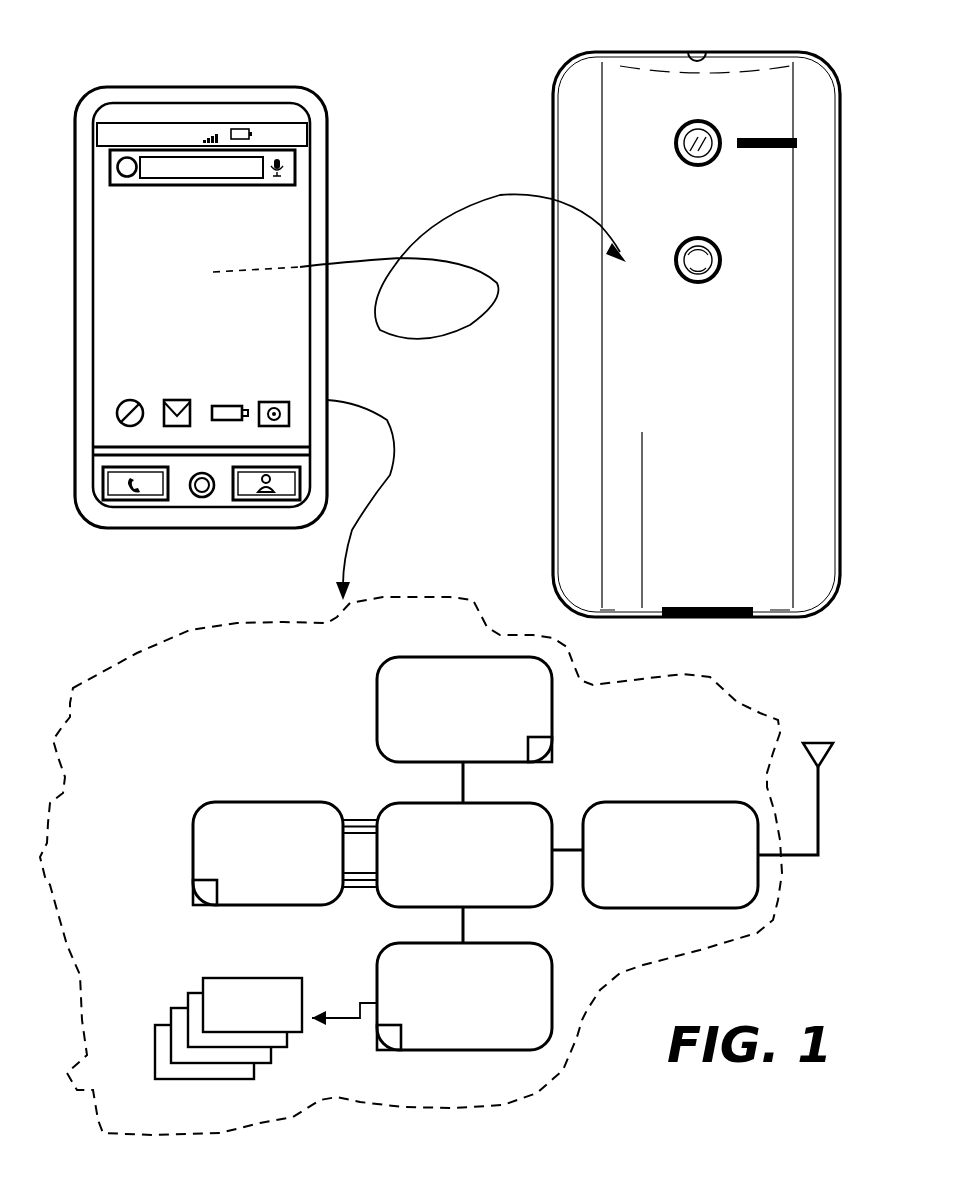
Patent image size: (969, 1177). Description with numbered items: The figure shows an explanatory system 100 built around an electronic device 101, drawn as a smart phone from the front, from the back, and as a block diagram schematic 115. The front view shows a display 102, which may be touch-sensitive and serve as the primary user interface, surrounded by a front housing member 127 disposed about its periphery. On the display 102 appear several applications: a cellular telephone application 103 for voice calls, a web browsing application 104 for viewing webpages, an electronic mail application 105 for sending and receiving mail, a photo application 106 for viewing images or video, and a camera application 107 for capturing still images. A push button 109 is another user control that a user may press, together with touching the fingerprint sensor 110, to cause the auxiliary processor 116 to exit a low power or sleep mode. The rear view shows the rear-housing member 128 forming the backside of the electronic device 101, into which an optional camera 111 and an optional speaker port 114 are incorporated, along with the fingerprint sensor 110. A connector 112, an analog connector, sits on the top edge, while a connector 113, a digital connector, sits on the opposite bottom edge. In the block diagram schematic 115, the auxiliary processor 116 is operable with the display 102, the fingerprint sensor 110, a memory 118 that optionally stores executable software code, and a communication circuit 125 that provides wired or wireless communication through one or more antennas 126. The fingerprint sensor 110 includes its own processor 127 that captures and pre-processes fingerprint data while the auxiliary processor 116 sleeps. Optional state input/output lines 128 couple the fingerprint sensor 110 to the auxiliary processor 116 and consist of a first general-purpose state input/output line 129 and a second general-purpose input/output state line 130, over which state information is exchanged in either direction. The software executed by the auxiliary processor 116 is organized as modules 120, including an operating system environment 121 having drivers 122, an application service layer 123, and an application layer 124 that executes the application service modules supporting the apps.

The system 100 is at (444, 125).
The electronic device 101 is at (327, 218).
The display 102 is at (110, 311).
The cellular telephone application 103 is at (110, 505).
The web browsing application 104 is at (130, 400).
The electronic mail application 105 is at (175, 400).
The photo application 106 is at (227, 404).
The camera application 107 is at (274, 400).
The push button 109 is at (75, 178).
The fingerprint sensor 110 is at (700, 283).
The camera 111 is at (684, 162).
The connector 112 is at (697, 52).
The connector 113 is at (718, 617).
The speaker port 114 is at (790, 150).
The block diagram schematic 115 is at (738, 702).
The auxiliary processor 116 is at (548, 803).
The memory 118 is at (560, 985).
The modules 120 is at (236, 1026).
The operating system environment 121 is at (285, 987).
The drivers 122 is at (278, 1043).
The application service layer 123 is at (258, 1058).
The application layer 124 is at (236, 1075).
The communication circuit 125 is at (660, 802).
The antennas 126 is at (813, 745).
The front housing member 127 is at (318, 340).
The rear-housing member 128 is at (598, 385).
The first general-purpose state input/output line 129 is at (360, 820).
The second general-purpose input/output state line 130 is at (365, 833).